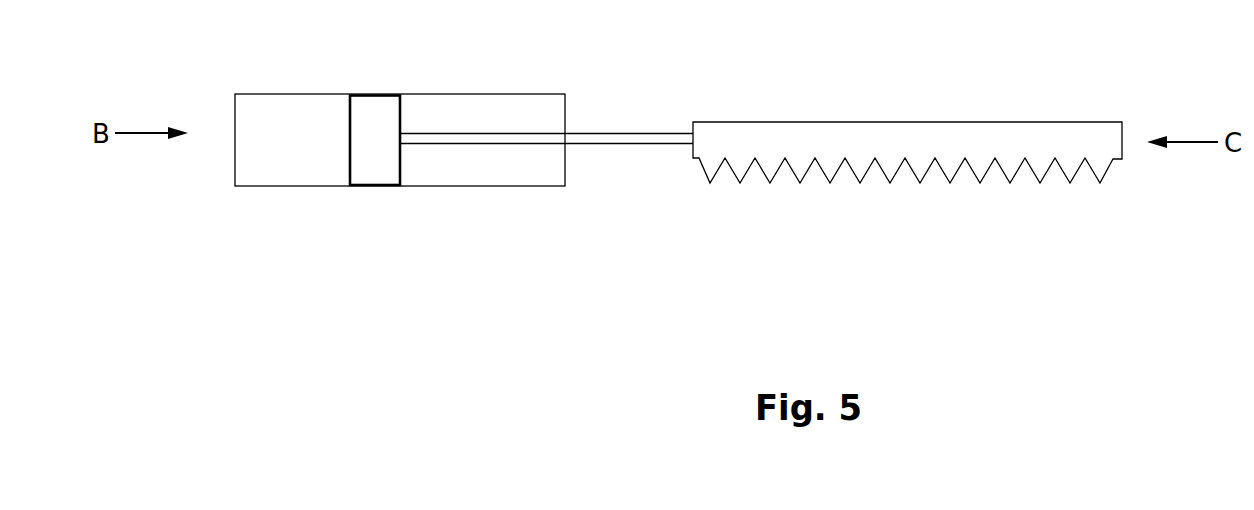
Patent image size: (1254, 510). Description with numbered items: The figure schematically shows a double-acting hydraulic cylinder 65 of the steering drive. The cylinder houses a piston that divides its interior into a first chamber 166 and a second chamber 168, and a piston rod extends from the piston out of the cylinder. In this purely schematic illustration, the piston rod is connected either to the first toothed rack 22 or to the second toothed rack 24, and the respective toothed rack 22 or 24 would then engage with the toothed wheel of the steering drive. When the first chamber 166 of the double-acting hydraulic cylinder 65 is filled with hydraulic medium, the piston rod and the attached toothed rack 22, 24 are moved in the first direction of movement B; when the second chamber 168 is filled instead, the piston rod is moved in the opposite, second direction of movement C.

The double-acting hydraulic cylinder 65 is at (504, 206).
The first chamber 166 is at (293, 165).
The second chamber 168 is at (462, 112).
The first toothed rack 22 is at (907, 203).
The second toothed rack 24 is at (957, 153).